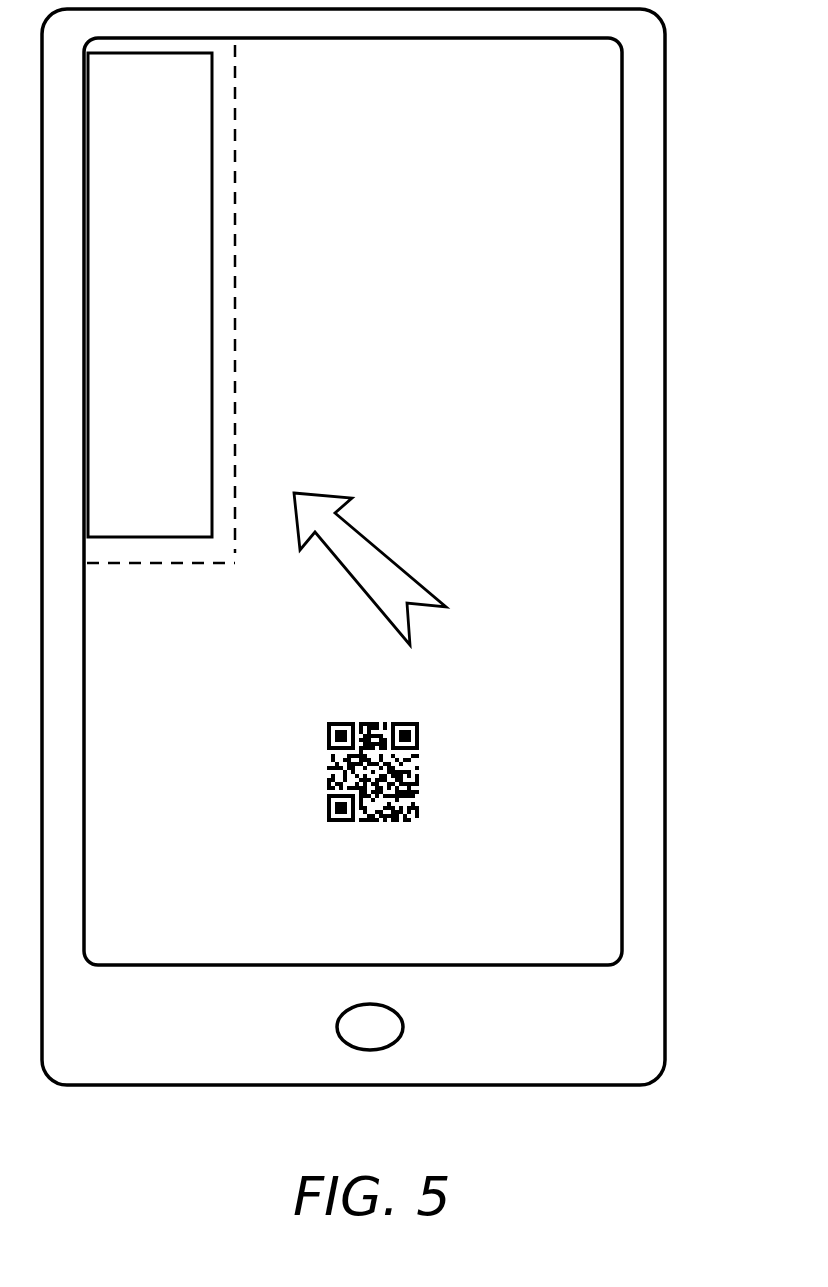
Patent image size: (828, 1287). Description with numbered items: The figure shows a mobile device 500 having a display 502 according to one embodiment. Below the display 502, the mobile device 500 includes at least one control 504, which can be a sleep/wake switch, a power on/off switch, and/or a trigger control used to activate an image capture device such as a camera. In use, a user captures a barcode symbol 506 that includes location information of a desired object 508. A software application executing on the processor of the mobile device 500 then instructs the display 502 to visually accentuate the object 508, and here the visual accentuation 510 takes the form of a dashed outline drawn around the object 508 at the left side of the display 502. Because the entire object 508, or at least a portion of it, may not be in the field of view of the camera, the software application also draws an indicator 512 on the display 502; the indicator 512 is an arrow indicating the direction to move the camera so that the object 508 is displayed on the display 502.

The mobile device 500 is at (665, 195).
The display 502 is at (620, 352).
The control 504 is at (403, 1020).
The barcode symbol 506 is at (418, 765).
The object 508 is at (172, 314).
The visual accentuation 510 is at (235, 147).
The indicator 512 is at (385, 548).